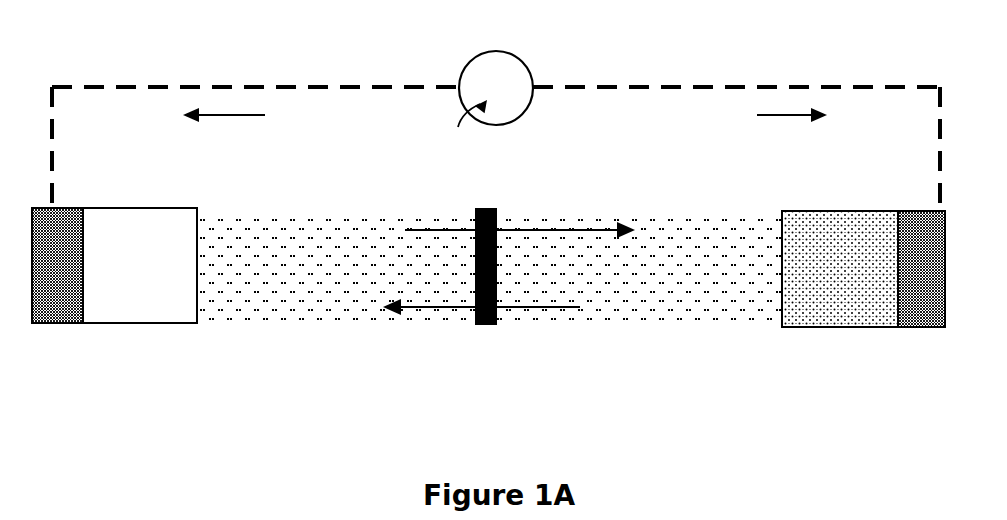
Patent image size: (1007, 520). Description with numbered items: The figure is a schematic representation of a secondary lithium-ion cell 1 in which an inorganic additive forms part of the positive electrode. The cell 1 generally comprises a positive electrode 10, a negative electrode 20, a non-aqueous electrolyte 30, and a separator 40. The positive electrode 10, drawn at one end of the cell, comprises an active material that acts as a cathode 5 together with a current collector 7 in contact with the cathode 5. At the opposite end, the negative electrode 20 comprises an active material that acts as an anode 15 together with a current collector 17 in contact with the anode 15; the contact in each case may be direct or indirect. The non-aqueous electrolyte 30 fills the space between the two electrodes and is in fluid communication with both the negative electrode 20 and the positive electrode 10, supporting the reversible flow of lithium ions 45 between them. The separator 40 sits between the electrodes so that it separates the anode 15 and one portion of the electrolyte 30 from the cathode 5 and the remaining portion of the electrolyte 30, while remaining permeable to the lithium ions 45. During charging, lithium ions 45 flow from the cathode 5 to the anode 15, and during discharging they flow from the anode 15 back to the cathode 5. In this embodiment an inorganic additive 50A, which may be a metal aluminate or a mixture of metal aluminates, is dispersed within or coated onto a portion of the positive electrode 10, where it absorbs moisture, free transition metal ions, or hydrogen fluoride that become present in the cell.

The secondary lithium-ion cell 1 is at (408, 42).
The cathode 5 is at (836, 346).
The current collector 7 is at (910, 323).
The positive electrode 10 is at (863, 350).
The anode 15 is at (117, 305).
The current collector 17 is at (53, 313).
The negative electrode 20 is at (114, 347).
The non-aqueous electrolyte 30 is at (250, 240).
The separator 40 is at (487, 325).
The lithium ions 45 is at (258, 293).
The inorganic additive in the positive electrode 50A is at (830, 223).